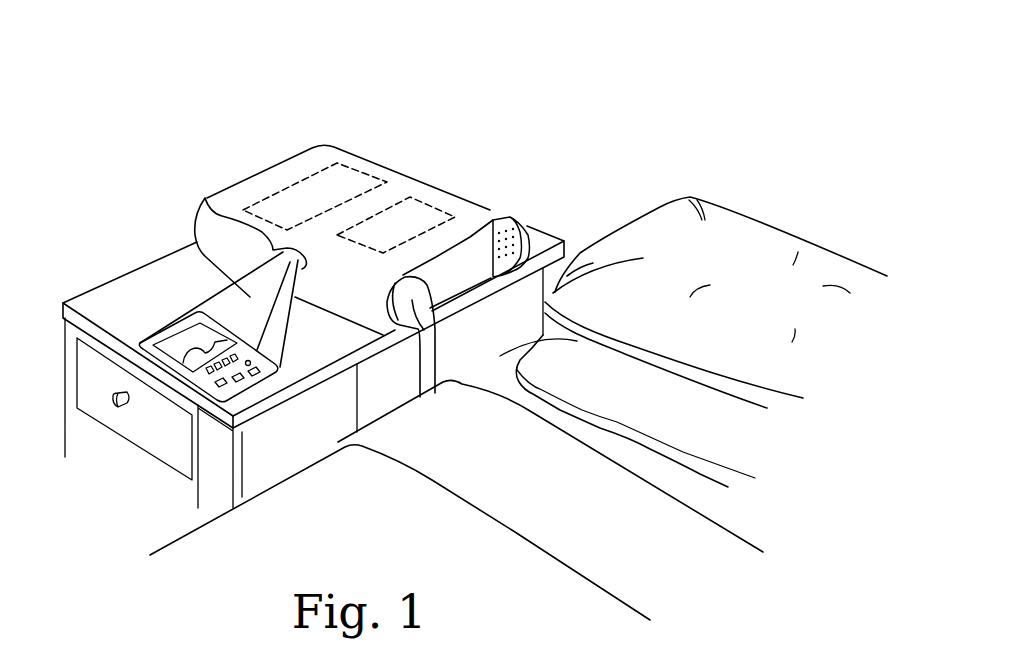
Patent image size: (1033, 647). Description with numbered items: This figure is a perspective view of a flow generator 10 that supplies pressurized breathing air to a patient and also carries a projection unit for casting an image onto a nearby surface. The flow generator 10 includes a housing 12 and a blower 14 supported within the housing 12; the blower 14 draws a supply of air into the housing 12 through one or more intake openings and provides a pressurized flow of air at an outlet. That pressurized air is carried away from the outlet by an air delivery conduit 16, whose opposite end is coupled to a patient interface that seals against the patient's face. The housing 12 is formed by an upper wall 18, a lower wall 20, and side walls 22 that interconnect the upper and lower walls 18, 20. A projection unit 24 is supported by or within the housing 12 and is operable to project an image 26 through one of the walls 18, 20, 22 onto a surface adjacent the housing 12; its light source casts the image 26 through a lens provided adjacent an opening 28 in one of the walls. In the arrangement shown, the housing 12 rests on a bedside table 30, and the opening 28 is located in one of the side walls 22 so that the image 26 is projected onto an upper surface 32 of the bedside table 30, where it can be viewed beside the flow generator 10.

The flow generator 10 is at (370, 181).
The housing 12 is at (370, 200).
The blower 14 is at (452, 190).
The air delivery conduit 16 is at (430, 358).
The upper wall 18 is at (270, 175).
The lower wall 20 is at (477, 290).
The side walls 22 is at (337, 290).
The projection unit 24 is at (323, 150).
The image 26 is at (188, 297).
The opening 28 is at (203, 201).
The bedside table 30 is at (295, 367).
The upper surface 32 is at (127, 295).